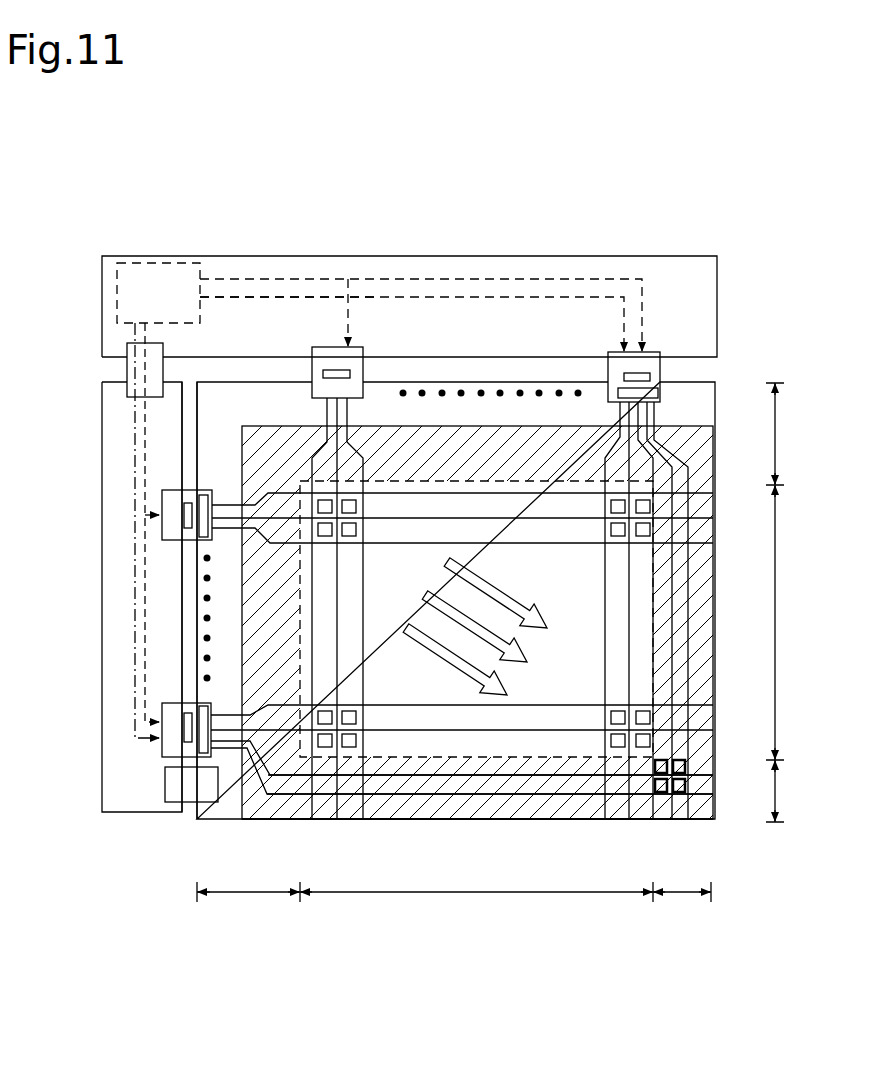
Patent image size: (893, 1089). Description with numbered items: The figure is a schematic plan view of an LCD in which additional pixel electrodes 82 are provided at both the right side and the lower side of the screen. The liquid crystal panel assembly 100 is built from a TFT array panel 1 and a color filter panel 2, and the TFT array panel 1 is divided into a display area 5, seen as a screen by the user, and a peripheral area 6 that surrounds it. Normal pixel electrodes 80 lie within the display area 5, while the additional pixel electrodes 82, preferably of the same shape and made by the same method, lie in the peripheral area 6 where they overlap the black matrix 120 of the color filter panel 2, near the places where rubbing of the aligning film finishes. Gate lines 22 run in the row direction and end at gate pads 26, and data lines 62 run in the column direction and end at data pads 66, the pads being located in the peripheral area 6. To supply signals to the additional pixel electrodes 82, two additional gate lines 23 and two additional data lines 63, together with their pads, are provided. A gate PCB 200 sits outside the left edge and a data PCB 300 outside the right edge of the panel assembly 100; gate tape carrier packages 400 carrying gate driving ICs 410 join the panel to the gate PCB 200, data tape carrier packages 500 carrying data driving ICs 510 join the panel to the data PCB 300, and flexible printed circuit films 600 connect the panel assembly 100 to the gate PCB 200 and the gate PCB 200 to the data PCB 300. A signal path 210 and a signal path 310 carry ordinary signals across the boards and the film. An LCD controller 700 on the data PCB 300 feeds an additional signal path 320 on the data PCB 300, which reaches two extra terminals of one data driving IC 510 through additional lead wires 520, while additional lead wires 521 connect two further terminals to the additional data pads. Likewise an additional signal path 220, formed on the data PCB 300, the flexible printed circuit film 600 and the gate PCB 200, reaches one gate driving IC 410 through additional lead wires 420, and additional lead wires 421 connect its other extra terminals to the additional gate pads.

The TFT array panel 1 is at (707, 382).
The color filter panel 2 is at (702, 428).
The display area 5 is at (549, 706).
The peripheral area 6 is at (497, 654).
The gate lines 22 is at (555, 493).
The additional gate lines 23 is at (490, 795).
The gate pads 26 is at (200, 532).
The data lines 62 is at (363, 617).
The additional data lines 63 is at (715, 605).
The data pads 66 is at (367, 297).
The normal pixel electrodes 80 is at (655, 500).
The additional pixel electrodes 82 is at (668, 793).
The liquid crystal panel assembly 100 is at (280, 819).
The black matrix 120 is at (520, 820).
The gate PCB 200 is at (100, 752).
The signal path 210 is at (145, 423).
The additional signal path 220 is at (135, 463).
The data PCB 300 is at (614, 258).
The signal path 310 is at (497, 298).
The additional signal path 320 is at (455, 280).
The gate tape carrier packages 400 is at (162, 500).
The gate driving ICs 410 is at (186, 518).
The additional lead wires 420 is at (167, 742).
The additional lead wires 421 is at (205, 753).
The data tape carrier packages 500 is at (322, 345).
The data driving ICs 510 is at (340, 372).
The additional lead wires 520 is at (650, 352).
The additional lead wires 521 is at (652, 378).
The flexible printed circuit films 600 is at (127, 367).
The LCD controller 700 is at (173, 262).